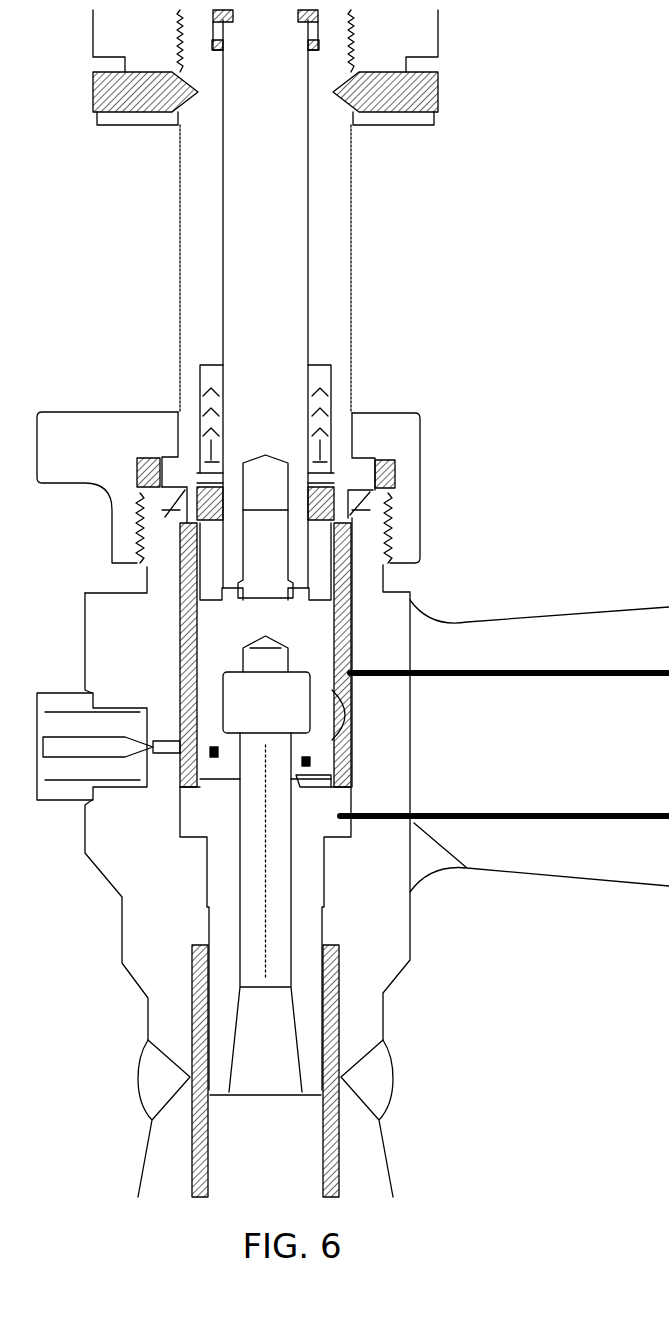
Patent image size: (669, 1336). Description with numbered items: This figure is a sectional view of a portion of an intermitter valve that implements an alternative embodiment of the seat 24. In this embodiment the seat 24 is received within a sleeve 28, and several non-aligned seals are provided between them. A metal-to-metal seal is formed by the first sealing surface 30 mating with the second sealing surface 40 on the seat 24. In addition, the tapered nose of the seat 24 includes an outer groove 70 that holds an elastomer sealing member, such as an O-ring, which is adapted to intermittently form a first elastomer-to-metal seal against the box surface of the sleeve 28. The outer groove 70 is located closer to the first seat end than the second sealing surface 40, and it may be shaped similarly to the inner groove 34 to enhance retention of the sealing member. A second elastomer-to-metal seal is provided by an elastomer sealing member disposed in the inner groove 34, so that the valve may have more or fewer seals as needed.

The seat 24 is at (205, 972).
The sleeve 28 is at (208, 595).
The first sealing surface 30 is at (439, 605).
The inner groove 34 is at (317, 753).
The second sealing surface 40 is at (318, 770).
The outer groove 70 is at (305, 785).